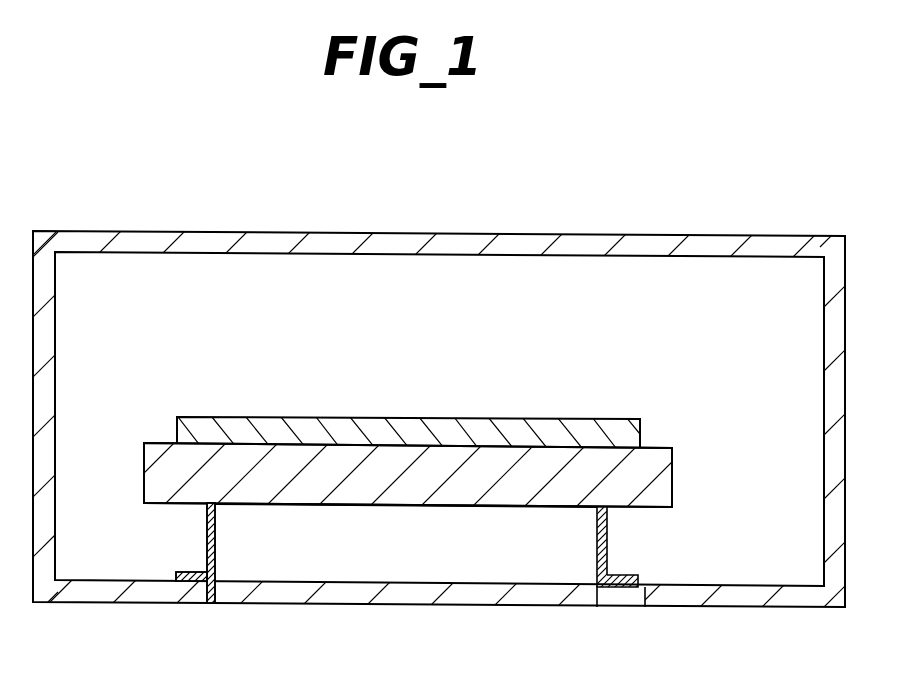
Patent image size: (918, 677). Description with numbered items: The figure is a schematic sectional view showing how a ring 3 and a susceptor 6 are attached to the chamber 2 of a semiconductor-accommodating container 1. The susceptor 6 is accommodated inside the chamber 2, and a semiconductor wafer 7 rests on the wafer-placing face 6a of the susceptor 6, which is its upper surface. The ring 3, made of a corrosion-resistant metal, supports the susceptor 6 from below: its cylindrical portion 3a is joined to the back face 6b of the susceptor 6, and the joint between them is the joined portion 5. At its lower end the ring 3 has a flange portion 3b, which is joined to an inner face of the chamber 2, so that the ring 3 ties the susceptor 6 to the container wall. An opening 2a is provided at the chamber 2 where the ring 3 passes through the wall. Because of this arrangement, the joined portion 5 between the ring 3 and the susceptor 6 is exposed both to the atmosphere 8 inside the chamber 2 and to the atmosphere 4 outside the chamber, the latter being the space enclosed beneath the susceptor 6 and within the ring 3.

The semiconductor-accommodating container 1 is at (705, 226).
The chamber 2 is at (581, 243).
The opening 2a is at (590, 596).
The ring 3 is at (627, 558).
The cylindrical portion 3a is at (597, 543).
The flange portion 3b is at (643, 577).
The atmosphere outside the chamber 4 is at (406, 558).
The joined portion 5 is at (206, 506).
The susceptor 6 is at (677, 462).
The wafer-placing face 6a is at (343, 445).
The back face 6b is at (297, 510).
The semiconductor wafer 7 is at (432, 428).
The atmosphere inside the chamber 8 is at (610, 358).